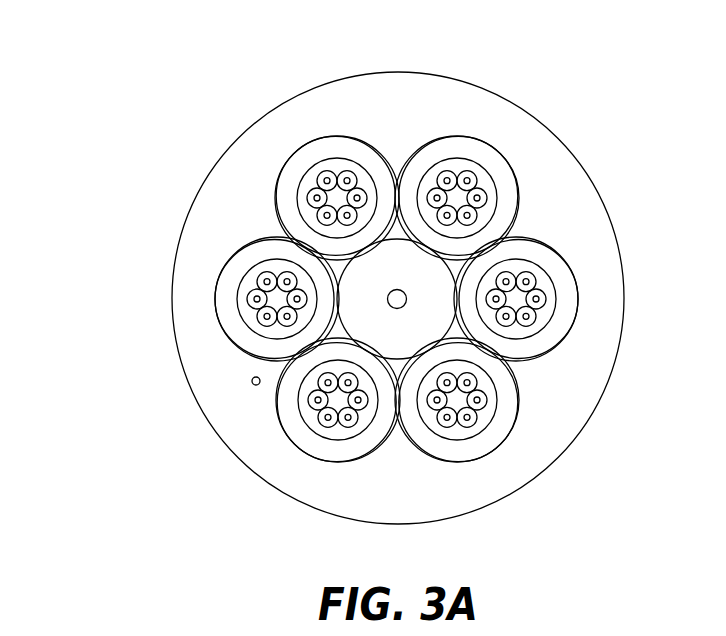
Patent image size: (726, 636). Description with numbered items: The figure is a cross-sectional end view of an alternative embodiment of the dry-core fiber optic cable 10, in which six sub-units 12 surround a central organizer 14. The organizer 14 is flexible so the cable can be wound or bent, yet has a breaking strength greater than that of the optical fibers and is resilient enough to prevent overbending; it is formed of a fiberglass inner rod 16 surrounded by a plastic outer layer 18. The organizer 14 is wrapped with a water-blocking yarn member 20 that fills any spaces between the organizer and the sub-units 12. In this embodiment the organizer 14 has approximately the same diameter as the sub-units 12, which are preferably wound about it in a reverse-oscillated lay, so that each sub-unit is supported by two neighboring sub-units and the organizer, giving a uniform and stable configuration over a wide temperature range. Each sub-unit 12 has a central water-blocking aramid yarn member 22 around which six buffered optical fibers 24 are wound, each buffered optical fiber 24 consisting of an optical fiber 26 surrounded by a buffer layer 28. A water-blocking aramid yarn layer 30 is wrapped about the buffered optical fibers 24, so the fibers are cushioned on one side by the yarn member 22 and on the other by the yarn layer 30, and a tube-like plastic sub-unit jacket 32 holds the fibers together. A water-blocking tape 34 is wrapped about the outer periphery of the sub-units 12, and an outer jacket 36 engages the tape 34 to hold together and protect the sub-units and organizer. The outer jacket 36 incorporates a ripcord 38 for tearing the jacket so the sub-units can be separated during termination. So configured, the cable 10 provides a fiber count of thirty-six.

The cable 10 is at (130, 118).
The sub-unit 12 is at (364, 116).
The organizer 14 is at (330, 352).
The inner rod 16 is at (402, 297).
The outer layer 18 is at (362, 279).
The water-blocking yarn member 20 is at (482, 346).
The central water-blocking aramid yarn member 22 is at (466, 419).
The buffered optical fiber 24 is at (454, 158).
The optical fiber 26 is at (468, 179).
The buffer layer 28 is at (476, 197).
The water-blocking aramid yarn layer 30 is at (318, 183).
The sub-unit jacket 32 is at (228, 307).
The water-blocking tape 34 is at (570, 268).
The outer jacket 36 is at (218, 210).
The ripcord 38 is at (252, 384).